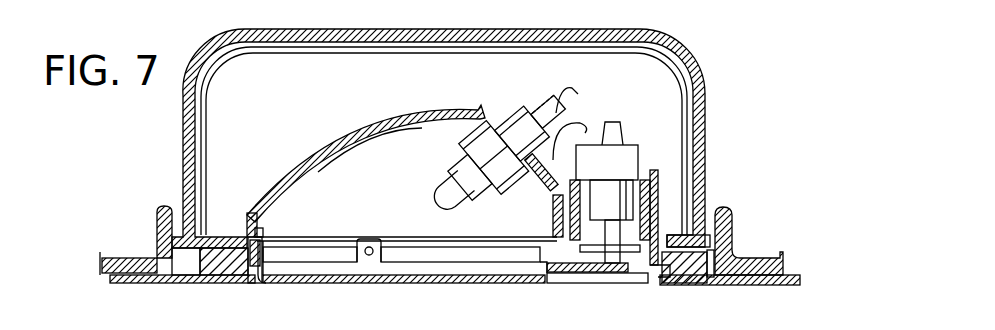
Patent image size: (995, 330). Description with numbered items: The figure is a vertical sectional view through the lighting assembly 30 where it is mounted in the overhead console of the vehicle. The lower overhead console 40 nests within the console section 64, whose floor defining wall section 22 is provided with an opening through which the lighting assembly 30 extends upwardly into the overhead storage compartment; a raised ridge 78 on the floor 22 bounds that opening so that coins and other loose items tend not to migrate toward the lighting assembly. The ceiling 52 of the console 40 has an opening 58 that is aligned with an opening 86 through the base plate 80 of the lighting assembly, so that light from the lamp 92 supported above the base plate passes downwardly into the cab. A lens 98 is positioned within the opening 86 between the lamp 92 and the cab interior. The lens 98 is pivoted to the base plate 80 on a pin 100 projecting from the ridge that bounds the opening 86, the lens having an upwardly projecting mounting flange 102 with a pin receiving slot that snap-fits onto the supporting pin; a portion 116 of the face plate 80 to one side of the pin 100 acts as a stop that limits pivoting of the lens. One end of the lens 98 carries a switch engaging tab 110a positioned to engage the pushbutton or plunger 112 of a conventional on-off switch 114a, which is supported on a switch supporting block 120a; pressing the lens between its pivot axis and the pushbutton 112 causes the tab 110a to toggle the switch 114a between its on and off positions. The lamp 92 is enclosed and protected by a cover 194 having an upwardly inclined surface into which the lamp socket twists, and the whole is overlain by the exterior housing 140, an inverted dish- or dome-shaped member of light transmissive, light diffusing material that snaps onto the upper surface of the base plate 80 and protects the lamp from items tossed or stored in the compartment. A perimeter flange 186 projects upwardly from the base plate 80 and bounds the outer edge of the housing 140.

The lighting assembly 30 is at (166, 146).
The exterior housing 140 is at (681, 46).
The cover 194 is at (335, 152).
The opening 86 is at (263, 250).
The lens 98 is at (345, 285).
The portion of face plate 116 is at (262, 253).
The pin 100 is at (364, 238).
The pin 102 is at (385, 240).
The switch engaging tab 110a is at (578, 268).
The lamp 92 is at (458, 205).
The pushbutton 112 is at (608, 232).
The on-off switch 114a is at (607, 195).
The switch supporting block 120a is at (672, 192).
The base plate 80 is at (672, 229).
The perimeter flange 186 is at (713, 230).
The console section 64 is at (739, 223).
The lower overhead console 40 is at (128, 289).
The floor 22 is at (122, 258).
The raised ridge 78 is at (163, 208).
The ceiling 52 is at (148, 287).
The opening 58 is at (233, 288).